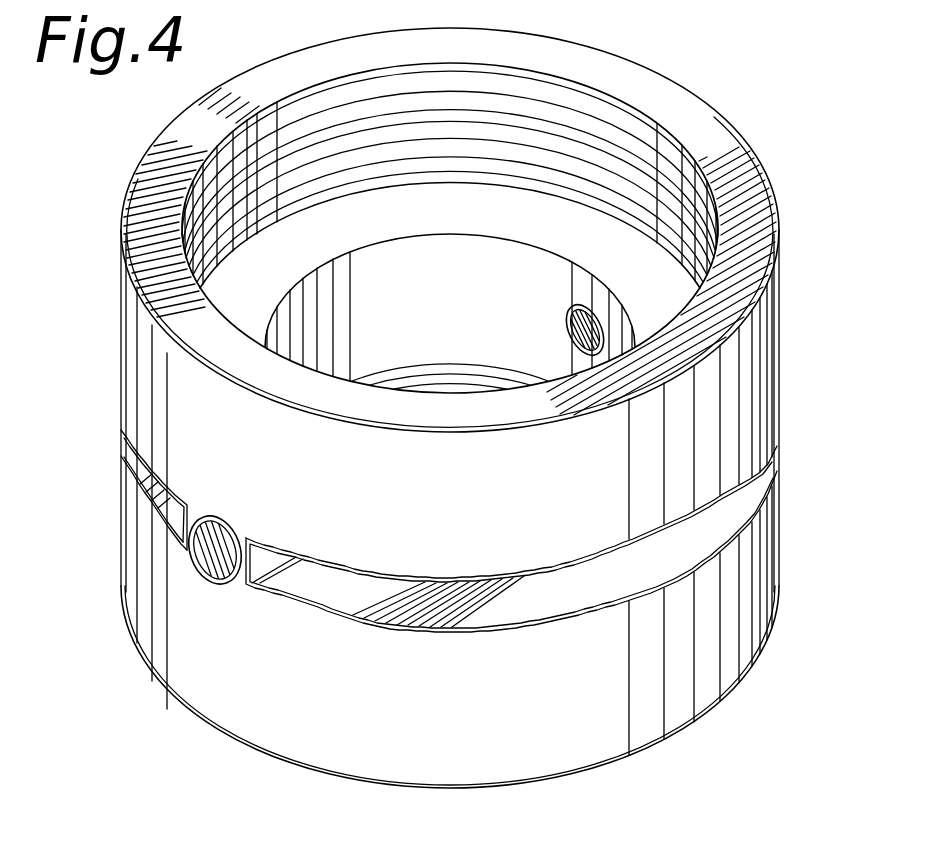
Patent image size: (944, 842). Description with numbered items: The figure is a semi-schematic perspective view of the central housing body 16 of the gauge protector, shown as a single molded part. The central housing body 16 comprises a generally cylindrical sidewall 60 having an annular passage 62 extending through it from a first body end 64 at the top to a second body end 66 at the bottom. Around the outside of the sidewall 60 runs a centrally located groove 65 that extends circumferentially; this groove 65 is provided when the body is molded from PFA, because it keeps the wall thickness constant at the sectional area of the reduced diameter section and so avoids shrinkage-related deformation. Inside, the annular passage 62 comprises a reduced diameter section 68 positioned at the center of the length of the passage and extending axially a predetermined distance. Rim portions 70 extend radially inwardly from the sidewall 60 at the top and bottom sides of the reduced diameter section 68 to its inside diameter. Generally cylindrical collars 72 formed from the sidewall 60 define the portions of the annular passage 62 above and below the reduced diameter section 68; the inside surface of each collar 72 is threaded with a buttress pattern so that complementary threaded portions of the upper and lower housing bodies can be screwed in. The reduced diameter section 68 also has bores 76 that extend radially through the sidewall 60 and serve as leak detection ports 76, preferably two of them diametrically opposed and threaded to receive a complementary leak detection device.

The central housing body 16 is at (748, 124).
The cylindrical sidewall 60 is at (765, 357).
The annular passage 62 is at (339, 134).
The first body end 64 is at (157, 163).
The groove 65 is at (749, 484).
The second body end 66 is at (190, 714).
The reduced diameter section 68 is at (303, 310).
The rim portion 70 is at (469, 226).
The cylindrical collar 72 is at (605, 127).
The leak detection port 76 is at (193, 553).